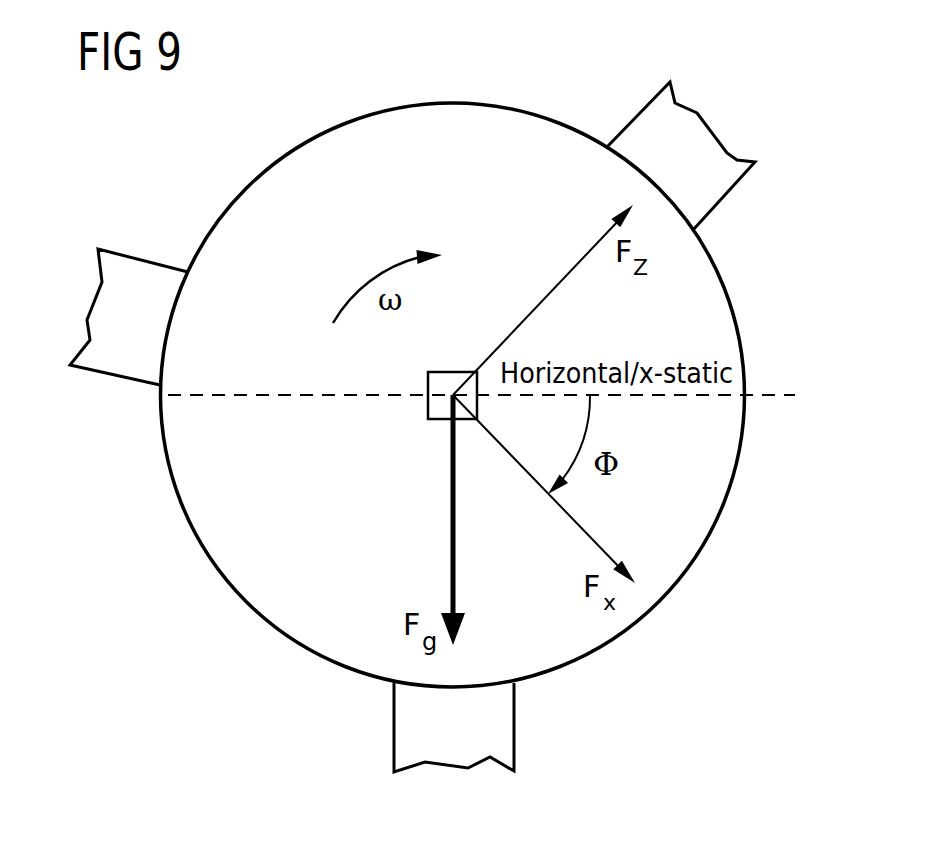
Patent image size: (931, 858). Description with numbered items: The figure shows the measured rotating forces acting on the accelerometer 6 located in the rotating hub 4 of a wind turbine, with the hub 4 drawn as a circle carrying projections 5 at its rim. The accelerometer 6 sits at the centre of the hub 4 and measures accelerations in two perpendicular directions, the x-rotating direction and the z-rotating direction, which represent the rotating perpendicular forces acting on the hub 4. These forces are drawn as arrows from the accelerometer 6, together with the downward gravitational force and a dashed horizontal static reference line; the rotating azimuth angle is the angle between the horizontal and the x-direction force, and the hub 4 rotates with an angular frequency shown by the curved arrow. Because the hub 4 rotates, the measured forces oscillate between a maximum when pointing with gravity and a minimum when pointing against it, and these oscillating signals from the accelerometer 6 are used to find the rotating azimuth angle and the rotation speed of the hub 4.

The hub 4 is at (262, 186).
The drum projection 5 is at (654, 120).
The accelerometer 6 is at (430, 411).